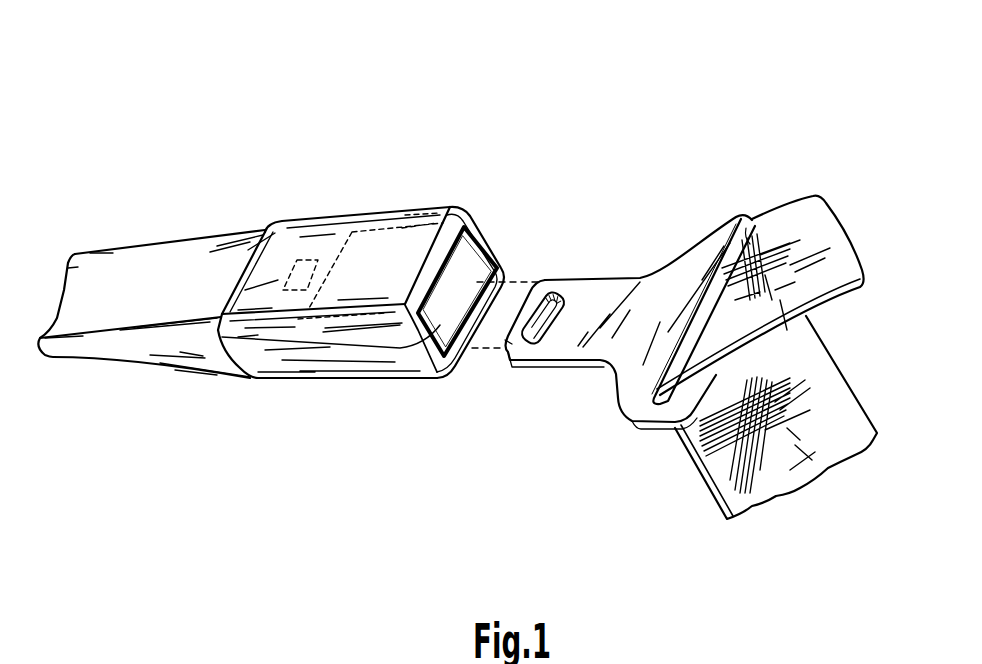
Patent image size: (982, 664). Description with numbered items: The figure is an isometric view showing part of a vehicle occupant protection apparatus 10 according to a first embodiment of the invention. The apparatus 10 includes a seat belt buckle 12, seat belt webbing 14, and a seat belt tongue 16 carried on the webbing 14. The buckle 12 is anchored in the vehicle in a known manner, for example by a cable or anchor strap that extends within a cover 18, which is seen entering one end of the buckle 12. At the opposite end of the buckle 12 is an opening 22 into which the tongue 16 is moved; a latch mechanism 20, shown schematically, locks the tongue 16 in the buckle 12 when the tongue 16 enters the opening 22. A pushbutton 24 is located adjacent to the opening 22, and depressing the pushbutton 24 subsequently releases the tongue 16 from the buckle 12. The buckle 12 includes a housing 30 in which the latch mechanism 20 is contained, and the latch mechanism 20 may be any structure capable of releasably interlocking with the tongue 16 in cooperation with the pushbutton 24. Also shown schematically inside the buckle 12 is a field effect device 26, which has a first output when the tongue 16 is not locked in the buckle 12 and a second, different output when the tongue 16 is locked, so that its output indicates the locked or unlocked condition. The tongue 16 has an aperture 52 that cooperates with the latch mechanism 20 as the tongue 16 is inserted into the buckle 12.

The vehicle occupant protection apparatus 10 is at (663, 78).
The seat belt buckle 12 is at (340, 150).
The seat belt webbing 14 is at (798, 220).
The seat belt tongue 16 is at (683, 255).
The cover 18 is at (176, 270).
The latch mechanism 20 is at (405, 227).
The opening 22 is at (471, 353).
The pushbutton 24 is at (468, 253).
The field effect device 26 is at (306, 258).
The housing 30 is at (367, 358).
The aperture 52 is at (556, 357).